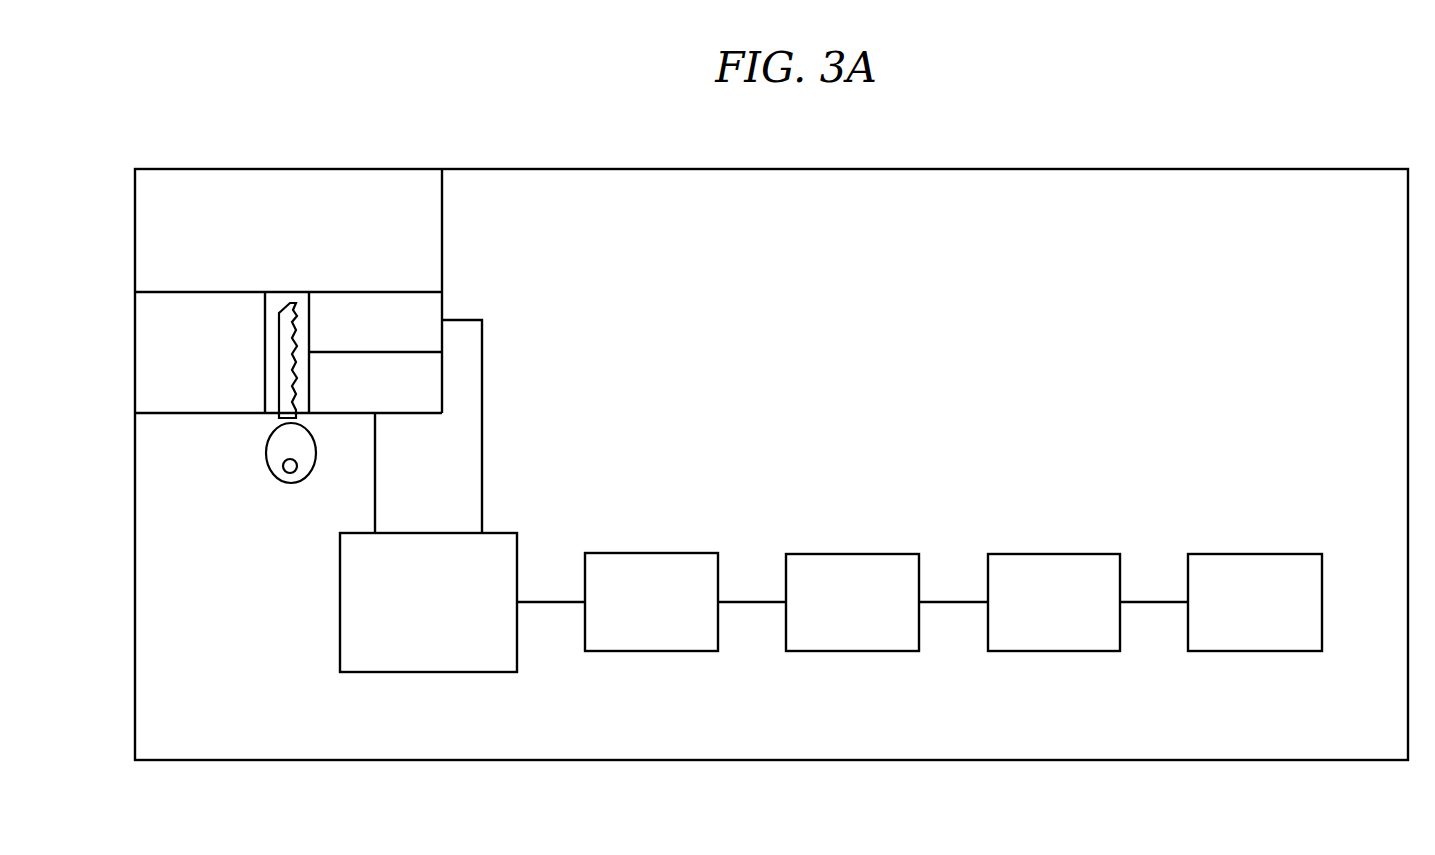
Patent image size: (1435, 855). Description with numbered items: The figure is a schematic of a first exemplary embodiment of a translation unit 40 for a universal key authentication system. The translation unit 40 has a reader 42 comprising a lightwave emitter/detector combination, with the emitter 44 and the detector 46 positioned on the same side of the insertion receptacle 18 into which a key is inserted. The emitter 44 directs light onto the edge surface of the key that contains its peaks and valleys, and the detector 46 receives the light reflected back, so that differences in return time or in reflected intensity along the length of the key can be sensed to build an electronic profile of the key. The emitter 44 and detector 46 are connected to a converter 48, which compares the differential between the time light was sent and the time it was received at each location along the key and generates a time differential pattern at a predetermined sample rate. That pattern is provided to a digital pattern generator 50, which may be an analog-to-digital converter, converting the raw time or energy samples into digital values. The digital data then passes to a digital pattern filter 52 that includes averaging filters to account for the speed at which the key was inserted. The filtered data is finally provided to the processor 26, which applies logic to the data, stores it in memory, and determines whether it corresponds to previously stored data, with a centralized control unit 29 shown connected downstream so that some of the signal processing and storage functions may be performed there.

The translation unit 40 is at (1188, 169).
The reader 42 is at (470, 296).
The insertion receptacle 18 is at (297, 302).
The emitter 44 is at (304, 348).
The detector 46 is at (298, 358).
The converter 48 is at (414, 616).
The digital pattern generator 50 is at (637, 616).
The digital pattern filter 52 is at (839, 616).
The processor 26 is at (1039, 616).
The centralized control unit 29 is at (1241, 616).